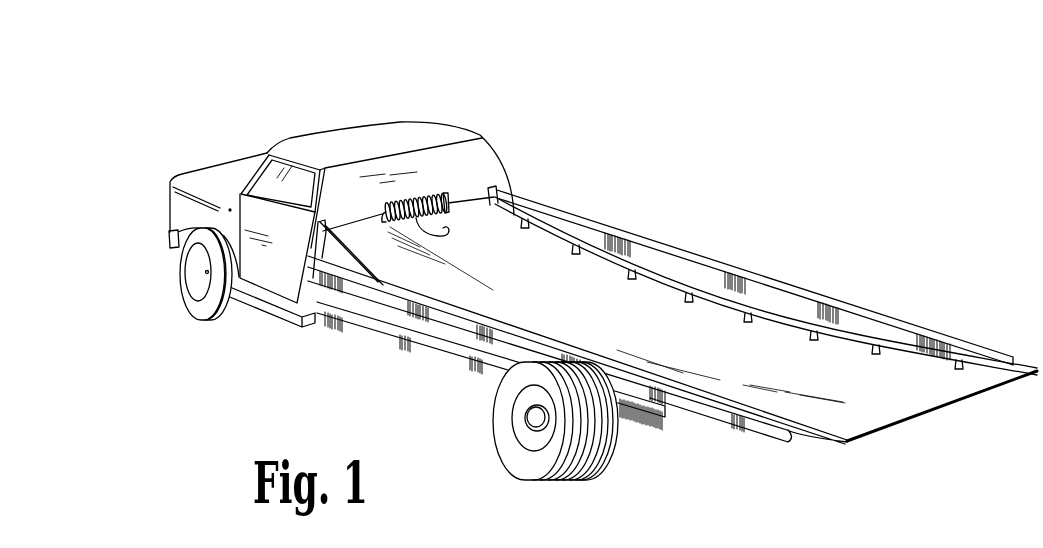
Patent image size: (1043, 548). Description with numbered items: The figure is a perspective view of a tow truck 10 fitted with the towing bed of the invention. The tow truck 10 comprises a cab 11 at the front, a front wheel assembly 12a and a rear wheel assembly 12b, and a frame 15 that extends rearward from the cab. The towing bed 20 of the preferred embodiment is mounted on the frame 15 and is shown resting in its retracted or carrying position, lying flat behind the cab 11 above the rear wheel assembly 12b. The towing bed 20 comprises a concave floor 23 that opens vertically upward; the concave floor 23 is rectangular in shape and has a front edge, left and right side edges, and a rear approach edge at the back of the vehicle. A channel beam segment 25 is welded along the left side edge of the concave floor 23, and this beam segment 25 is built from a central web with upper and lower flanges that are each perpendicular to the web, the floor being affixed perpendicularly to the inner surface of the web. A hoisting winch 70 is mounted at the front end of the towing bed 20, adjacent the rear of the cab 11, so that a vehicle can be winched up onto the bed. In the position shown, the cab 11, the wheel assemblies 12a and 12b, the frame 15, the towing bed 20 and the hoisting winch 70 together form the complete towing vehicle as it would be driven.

The tow truck 10 is at (341, 190).
The cab 11 is at (237, 172).
The front wheel assembly 12a is at (206, 274).
The rear wheel assembly 12b is at (533, 421).
The frame 15 is at (460, 362).
The towing bed 20 is at (559, 255).
The concave floor 23 is at (968, 403).
The channel beam segment 25 is at (400, 298).
The hoisting winch 70 is at (439, 188).